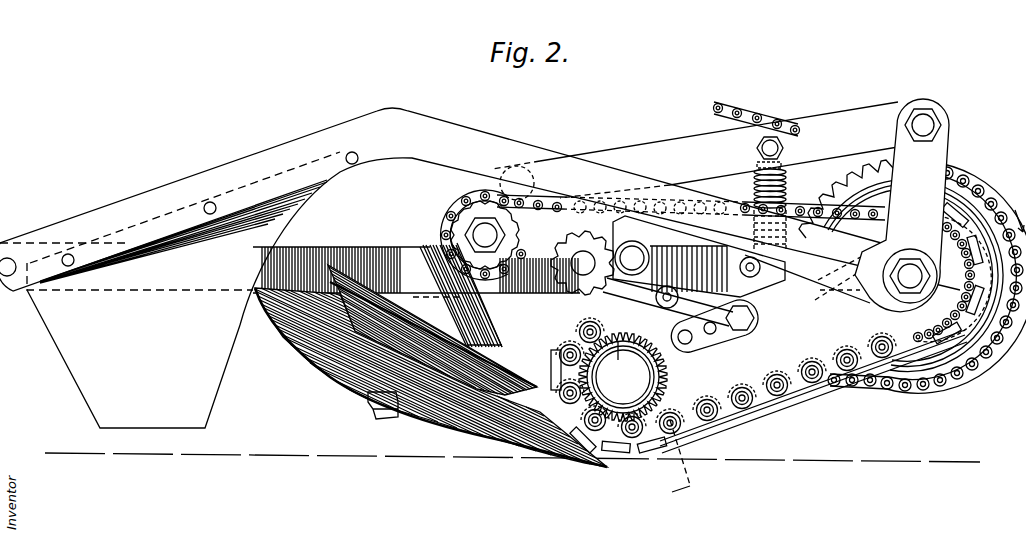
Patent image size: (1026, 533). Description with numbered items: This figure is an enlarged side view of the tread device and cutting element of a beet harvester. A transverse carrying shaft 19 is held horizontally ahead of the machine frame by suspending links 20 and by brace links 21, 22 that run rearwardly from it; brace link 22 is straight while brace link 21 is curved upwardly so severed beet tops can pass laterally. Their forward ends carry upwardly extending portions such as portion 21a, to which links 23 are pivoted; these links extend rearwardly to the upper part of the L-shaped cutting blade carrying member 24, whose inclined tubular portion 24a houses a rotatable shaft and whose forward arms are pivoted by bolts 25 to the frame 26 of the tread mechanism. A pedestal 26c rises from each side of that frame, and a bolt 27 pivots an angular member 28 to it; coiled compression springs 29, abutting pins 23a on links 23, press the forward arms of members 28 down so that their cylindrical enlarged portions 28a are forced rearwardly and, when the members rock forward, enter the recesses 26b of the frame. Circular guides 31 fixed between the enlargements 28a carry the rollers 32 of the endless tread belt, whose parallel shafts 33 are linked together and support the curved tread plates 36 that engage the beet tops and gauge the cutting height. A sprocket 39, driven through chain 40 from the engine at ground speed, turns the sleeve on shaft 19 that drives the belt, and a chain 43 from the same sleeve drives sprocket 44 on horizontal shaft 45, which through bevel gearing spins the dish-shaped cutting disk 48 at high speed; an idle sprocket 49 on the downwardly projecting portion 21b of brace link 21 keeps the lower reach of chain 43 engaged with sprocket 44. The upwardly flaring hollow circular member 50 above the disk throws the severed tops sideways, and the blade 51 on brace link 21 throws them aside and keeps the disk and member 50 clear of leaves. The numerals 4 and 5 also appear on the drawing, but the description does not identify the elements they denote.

The direction arrow 4 is at (1016, 213).
The machine frame 5 is at (552, 223).
The transverse carrying shaft 19 is at (914, 262).
The suspending links 20 is at (845, 276).
The brace link 21 is at (386, 118).
The upwardly extending portion 21a is at (937, 166).
The downwardly projecting portion 21b is at (569, 255).
The brace link 22 is at (328, 250).
The links 23 is at (833, 125).
The pins 23a is at (786, 150).
The cutting blade carrying member 24 is at (453, 247).
The inclined tubular portion 24a is at (478, 317).
The bolts 25 is at (745, 336).
The frame of the tread mechanism 26 is at (704, 358).
The cut away / recesses 26b is at (700, 412).
The pedestal 26c is at (745, 257).
The bolt 27 is at (634, 250).
The angular member 28 is at (670, 250).
The enlarged portions 28a is at (623, 377).
The coiled compression springs 29 is at (786, 197).
The circular guides 31 is at (563, 392).
The rollers 32 is at (742, 410).
The parallel shafts 33 is at (777, 379).
The tread plates 36 is at (782, 402).
The sprocket 39 is at (931, 385).
The chain 40 is at (752, 116).
The chain 43 is at (835, 198).
The sprocket 44 is at (468, 206).
The horizontal shaft 45 is at (479, 232).
The cutting disk 48 is at (352, 380).
The idle sprocket 49 is at (505, 318).
The hollow circular member 50 is at (502, 374).
The blade 51 is at (212, 388).